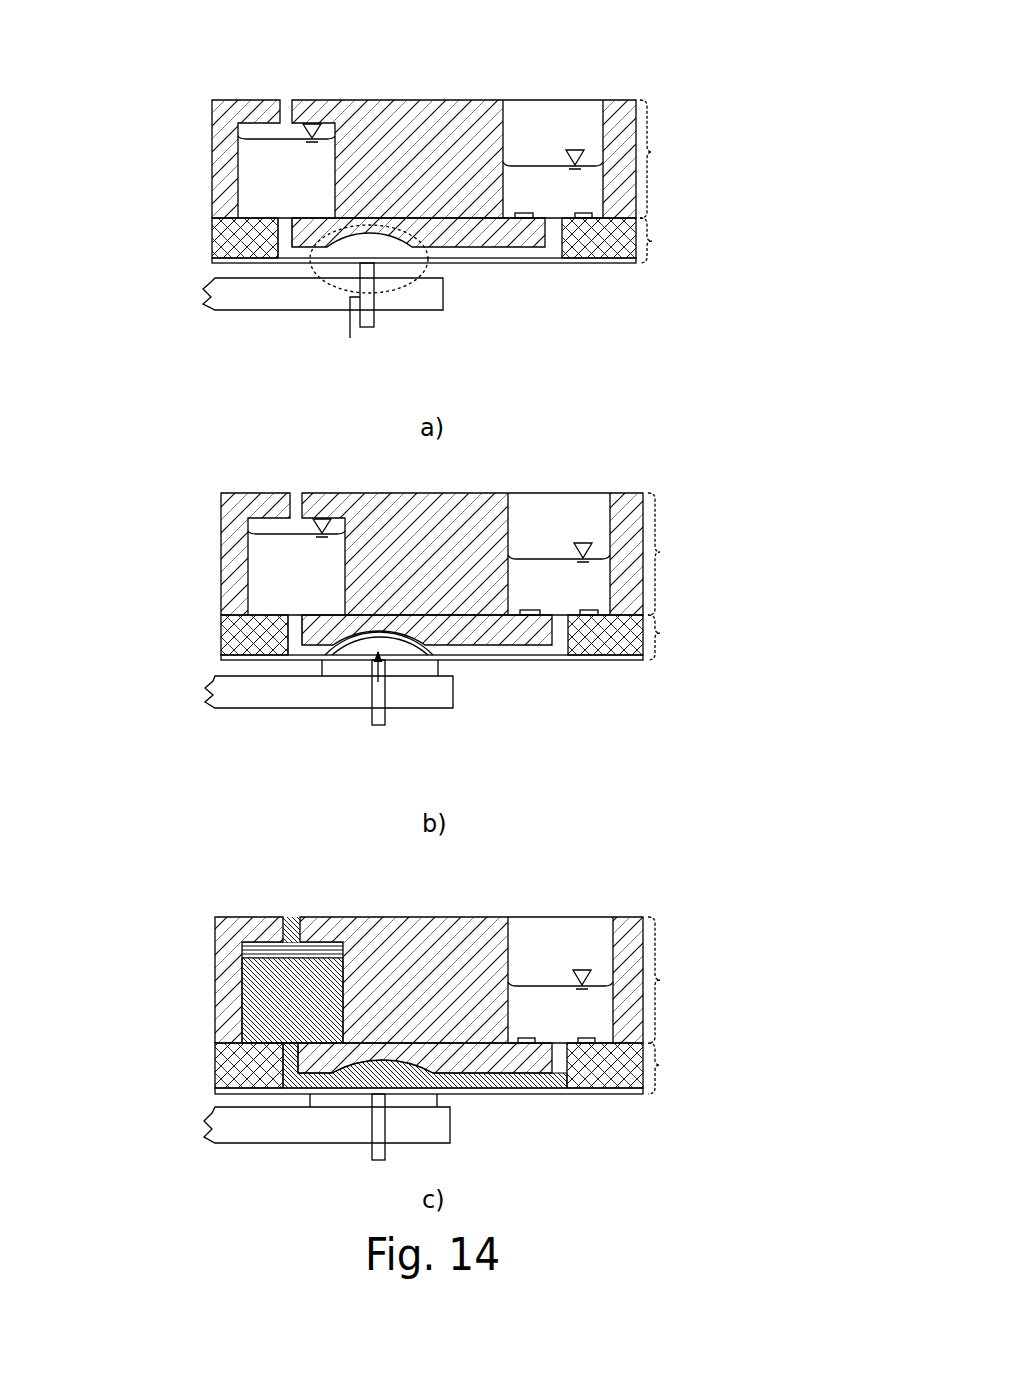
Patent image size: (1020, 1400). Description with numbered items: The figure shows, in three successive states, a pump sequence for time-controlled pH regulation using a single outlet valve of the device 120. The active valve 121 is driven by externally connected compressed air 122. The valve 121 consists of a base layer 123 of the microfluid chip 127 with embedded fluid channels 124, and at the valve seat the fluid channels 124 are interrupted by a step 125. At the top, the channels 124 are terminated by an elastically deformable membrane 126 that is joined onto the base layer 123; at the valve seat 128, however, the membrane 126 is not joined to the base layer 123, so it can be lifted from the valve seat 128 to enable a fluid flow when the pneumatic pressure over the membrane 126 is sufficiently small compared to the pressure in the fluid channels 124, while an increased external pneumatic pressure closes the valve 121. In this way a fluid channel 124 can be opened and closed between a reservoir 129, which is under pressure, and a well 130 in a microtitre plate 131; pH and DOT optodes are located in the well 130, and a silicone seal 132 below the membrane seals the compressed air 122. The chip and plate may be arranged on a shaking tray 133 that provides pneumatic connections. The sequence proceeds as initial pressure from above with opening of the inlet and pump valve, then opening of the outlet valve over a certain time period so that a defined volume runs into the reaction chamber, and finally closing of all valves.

The device 120 is at (637, 90).
The active valve 121 is at (350, 338).
The compressed air 122 is at (370, 332).
The base layer 123 is at (212, 240).
The fluid channel 124 is at (277, 219).
The step 125 is at (312, 263).
The elastically deformable membrane 126 is at (657, 265).
The microfluid chip 127 is at (657, 242).
The valve seat 128 is at (390, 250).
The reservoir 129 is at (262, 160).
The well 130 is at (543, 120).
The microtitre plate 131 is at (672, 152).
The silicone seal 132 is at (468, 275).
The shaking tray 133 is at (468, 298).